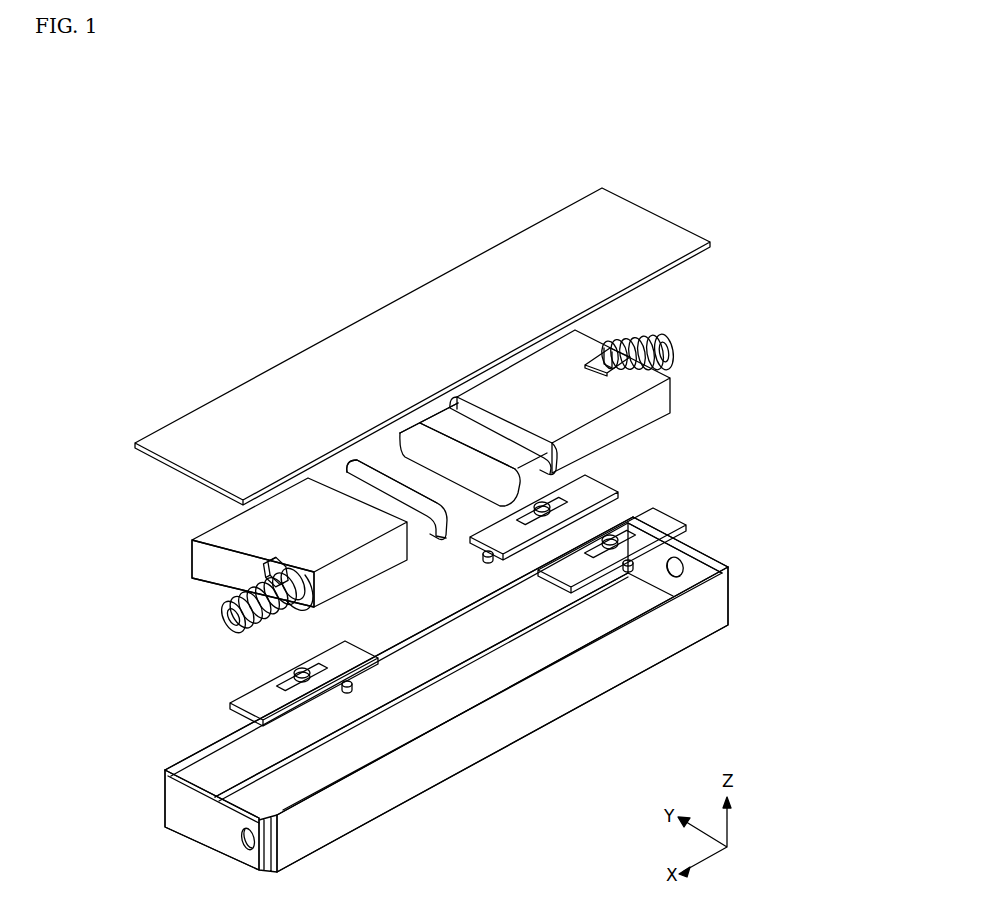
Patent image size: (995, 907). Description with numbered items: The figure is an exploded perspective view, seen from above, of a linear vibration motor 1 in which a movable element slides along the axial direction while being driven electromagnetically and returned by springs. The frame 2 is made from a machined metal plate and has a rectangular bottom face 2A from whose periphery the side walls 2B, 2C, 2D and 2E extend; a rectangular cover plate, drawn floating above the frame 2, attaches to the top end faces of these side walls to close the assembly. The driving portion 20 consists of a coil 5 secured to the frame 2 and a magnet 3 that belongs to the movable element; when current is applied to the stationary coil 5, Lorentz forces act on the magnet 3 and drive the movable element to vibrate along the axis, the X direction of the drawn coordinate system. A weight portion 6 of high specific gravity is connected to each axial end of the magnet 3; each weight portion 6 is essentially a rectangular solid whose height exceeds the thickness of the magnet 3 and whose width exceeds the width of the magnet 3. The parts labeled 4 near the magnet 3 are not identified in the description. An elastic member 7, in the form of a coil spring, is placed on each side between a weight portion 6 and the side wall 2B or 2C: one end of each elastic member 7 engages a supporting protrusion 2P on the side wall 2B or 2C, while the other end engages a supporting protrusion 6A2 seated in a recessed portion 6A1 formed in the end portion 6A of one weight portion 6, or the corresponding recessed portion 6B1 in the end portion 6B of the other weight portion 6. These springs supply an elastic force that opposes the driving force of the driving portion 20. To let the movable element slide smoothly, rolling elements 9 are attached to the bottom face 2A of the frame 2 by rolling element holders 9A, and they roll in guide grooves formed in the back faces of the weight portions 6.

The linear vibration motor 1 is at (309, 259).
The frame 2 is at (730, 617).
The bottom face 2A is at (200, 747).
The side wall 2B is at (172, 805).
The side wall 2C is at (712, 541).
The side wall 2D is at (380, 816).
The side wall 2E is at (232, 792).
The supporting protrusion 2P is at (235, 833).
The driving portion 20 is at (663, 218).
The magnet 3 is at (372, 487).
The connecting portion 4 is at (333, 477).
The coil 5 is at (417, 437).
The weight portion 6 is at (357, 581).
The end portion 6A is at (192, 562).
The recessed portion 6A1 is at (302, 608).
The supporting protrusion 6A2 is at (285, 618).
The end portion 6B is at (590, 337).
The recessed portion 6B1 is at (617, 353).
The elastic member 7 is at (223, 614).
The rolling element 9 is at (346, 654).
The rolling element holder 9A is at (486, 556).